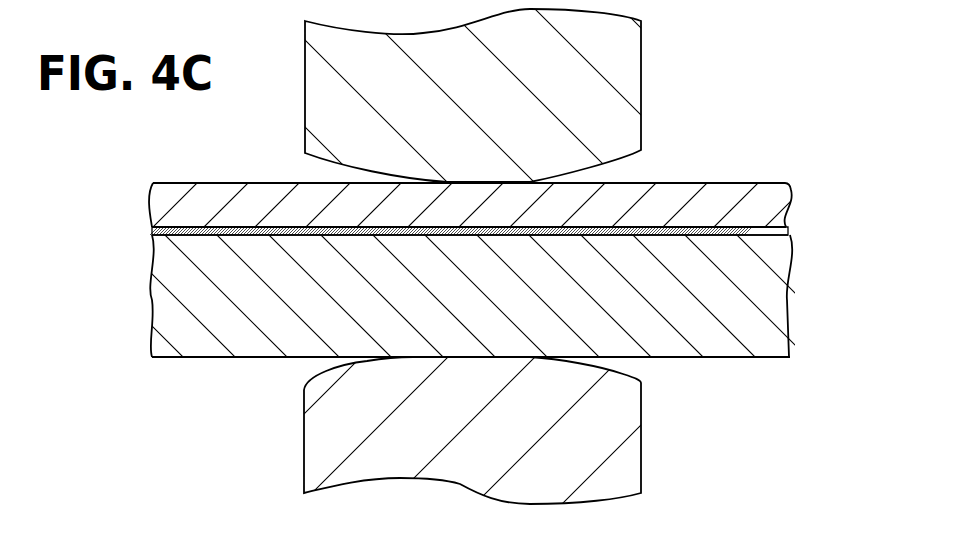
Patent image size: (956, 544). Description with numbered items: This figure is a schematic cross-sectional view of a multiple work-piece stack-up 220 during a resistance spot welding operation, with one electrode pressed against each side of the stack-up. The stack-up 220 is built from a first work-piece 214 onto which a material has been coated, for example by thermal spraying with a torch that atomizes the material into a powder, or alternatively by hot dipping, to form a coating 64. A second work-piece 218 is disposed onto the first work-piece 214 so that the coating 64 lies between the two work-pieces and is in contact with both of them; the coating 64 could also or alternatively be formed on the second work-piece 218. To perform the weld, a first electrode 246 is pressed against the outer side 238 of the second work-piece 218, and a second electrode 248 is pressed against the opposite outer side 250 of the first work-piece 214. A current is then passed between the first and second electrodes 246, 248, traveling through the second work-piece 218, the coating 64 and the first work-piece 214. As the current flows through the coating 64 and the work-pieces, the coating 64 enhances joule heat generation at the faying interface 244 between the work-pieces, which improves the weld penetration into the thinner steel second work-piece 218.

The first electrode 246 is at (494, 100).
The second electrode 248 is at (494, 458).
The work-piece stack-up 220 is at (471, 259).
The second work-piece 218 is at (536, 172).
The thermal spray coating 64 is at (785, 232).
The first work-piece 214 is at (466, 325).
The outer side of the second work-piece 238 is at (682, 183).
The faying interface 244 is at (208, 236).
The outer side of the first work-piece 250 is at (698, 357).